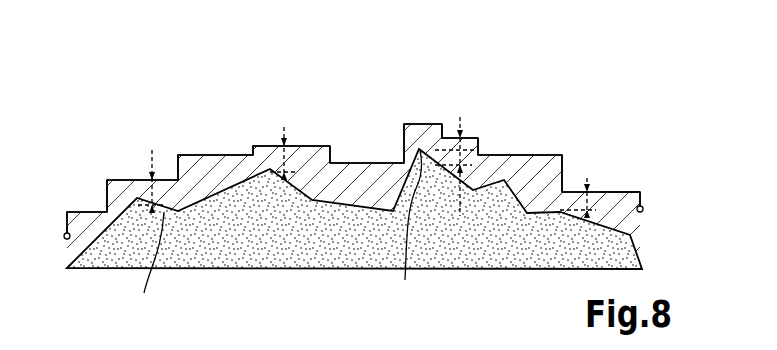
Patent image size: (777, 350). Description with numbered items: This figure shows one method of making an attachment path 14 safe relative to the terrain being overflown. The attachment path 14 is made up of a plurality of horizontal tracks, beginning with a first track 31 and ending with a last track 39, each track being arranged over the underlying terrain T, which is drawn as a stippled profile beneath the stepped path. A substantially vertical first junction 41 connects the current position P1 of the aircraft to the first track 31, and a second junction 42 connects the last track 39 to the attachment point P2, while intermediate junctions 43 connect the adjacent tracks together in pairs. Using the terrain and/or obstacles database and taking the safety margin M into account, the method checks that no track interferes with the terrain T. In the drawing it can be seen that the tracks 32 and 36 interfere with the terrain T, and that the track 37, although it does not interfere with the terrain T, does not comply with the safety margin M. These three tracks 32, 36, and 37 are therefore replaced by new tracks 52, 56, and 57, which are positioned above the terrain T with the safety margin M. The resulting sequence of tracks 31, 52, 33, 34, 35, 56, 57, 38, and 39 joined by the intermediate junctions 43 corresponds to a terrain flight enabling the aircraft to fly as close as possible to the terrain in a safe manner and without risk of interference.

The attachment path 14 is at (315, 92).
The first track 31 is at (80, 212).
The track 32 is at (151, 268).
The track 33 is at (200, 154).
The track 34 is at (262, 146).
The track 35 is at (356, 152).
The track 36 is at (411, 228).
The track 37 is at (480, 154).
The track 38 is at (548, 155).
The last track 39 is at (616, 191).
The first junction 41 is at (66, 232).
The second junction 42 is at (642, 199).
The intermediate junctions 43 is at (105, 193).
The new track 52 is at (117, 179).
The new track 56 is at (430, 124).
The new track 57 is at (470, 138).
The terrain T is at (485, 255).
The safety margin M is at (366, 165).
The current position P1 is at (49, 248).
The attachment point P2 is at (659, 223).